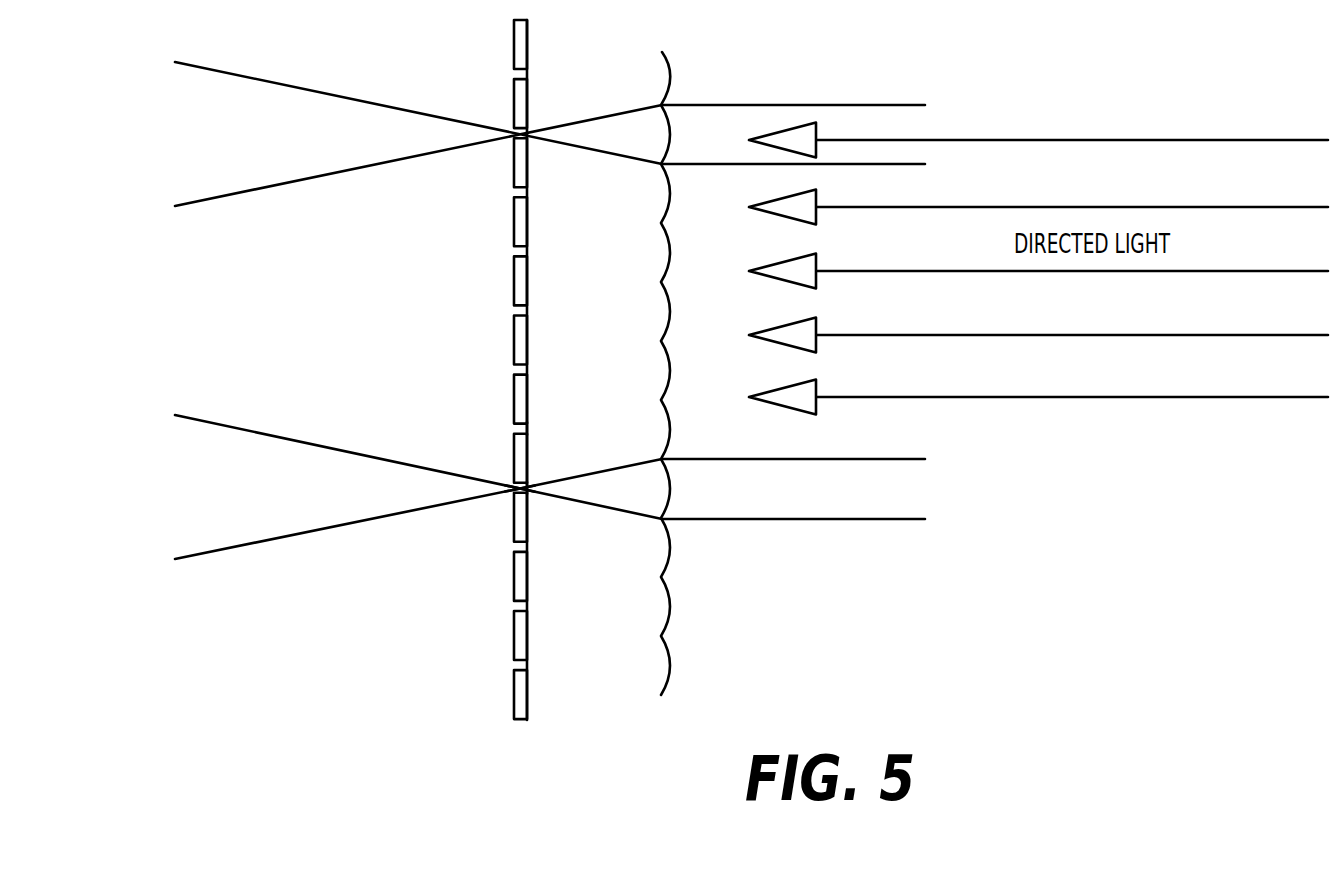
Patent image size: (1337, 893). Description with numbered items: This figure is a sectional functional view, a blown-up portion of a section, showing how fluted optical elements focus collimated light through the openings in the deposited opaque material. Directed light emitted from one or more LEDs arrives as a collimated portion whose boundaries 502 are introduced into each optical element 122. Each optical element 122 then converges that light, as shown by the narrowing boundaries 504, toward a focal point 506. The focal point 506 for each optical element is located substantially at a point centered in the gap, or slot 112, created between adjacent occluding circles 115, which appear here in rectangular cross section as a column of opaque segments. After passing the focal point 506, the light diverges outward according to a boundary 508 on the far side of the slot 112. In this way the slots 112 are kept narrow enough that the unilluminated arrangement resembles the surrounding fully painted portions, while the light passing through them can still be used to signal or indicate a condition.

The slot 112 is at (516, 489).
The occluding circle 115 is at (515, 332).
The optical element 122 is at (670, 482).
The boundaries of collimated light 502 is at (810, 460).
The narrowing boundaries 504 is at (604, 512).
The focal point 506 is at (516, 490).
The diverging boundary 508 is at (323, 450).